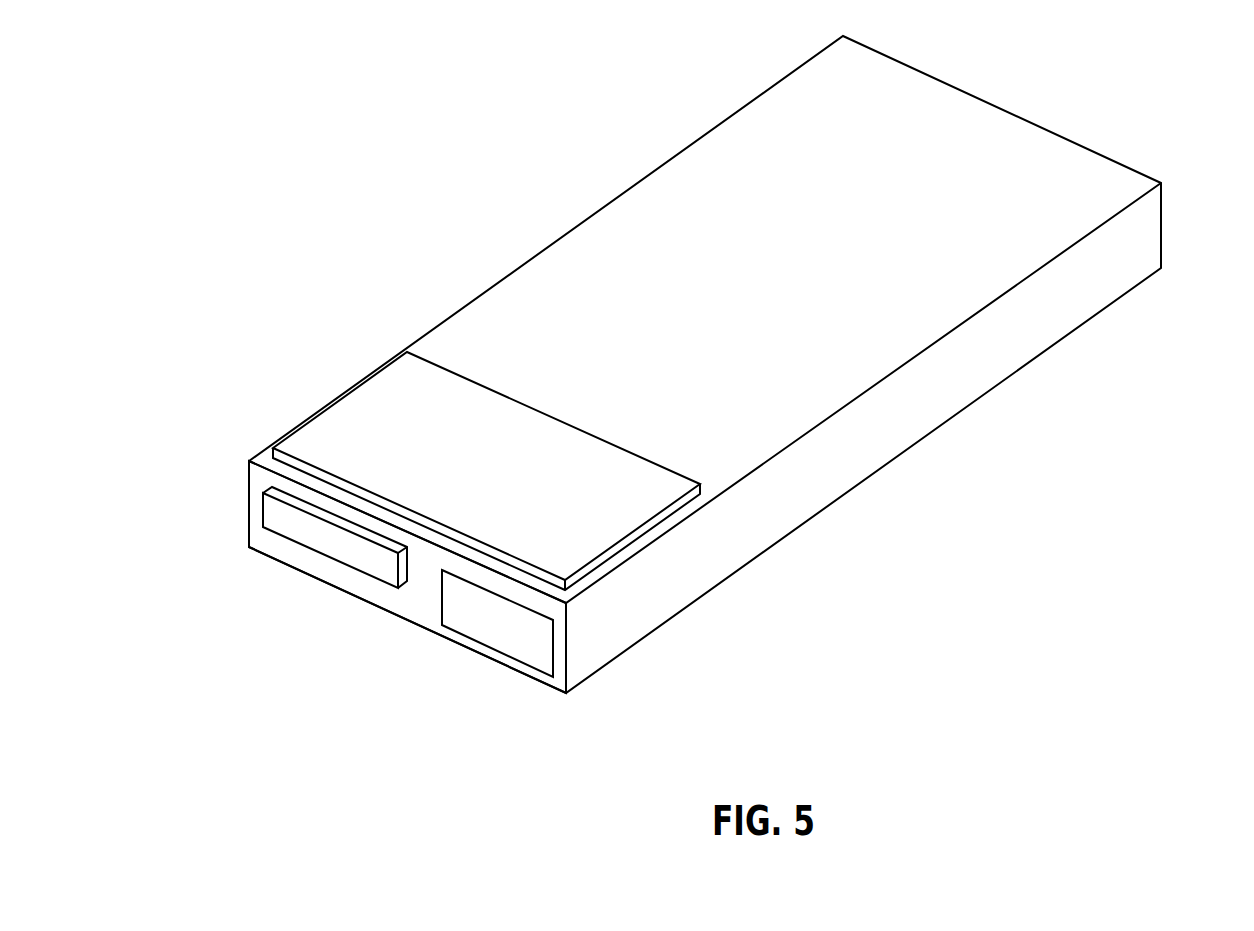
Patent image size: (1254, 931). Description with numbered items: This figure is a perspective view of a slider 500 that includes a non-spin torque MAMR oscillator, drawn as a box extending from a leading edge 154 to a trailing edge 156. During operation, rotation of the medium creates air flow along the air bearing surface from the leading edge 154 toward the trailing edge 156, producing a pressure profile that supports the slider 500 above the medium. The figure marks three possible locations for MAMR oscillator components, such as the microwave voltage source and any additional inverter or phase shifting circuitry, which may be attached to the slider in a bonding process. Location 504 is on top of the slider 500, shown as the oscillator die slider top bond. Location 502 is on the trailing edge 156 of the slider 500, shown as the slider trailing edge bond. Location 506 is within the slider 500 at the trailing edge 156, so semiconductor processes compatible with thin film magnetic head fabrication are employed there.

The slider 500 is at (455, 306).
The leading edge 154 is at (1161, 227).
The trailing edge 156 is at (427, 618).
The location on top of the slider 504 is at (396, 386).
The location on the trailing edge 502 is at (297, 523).
The location within the slider at the trailing edge 506 is at (540, 655).